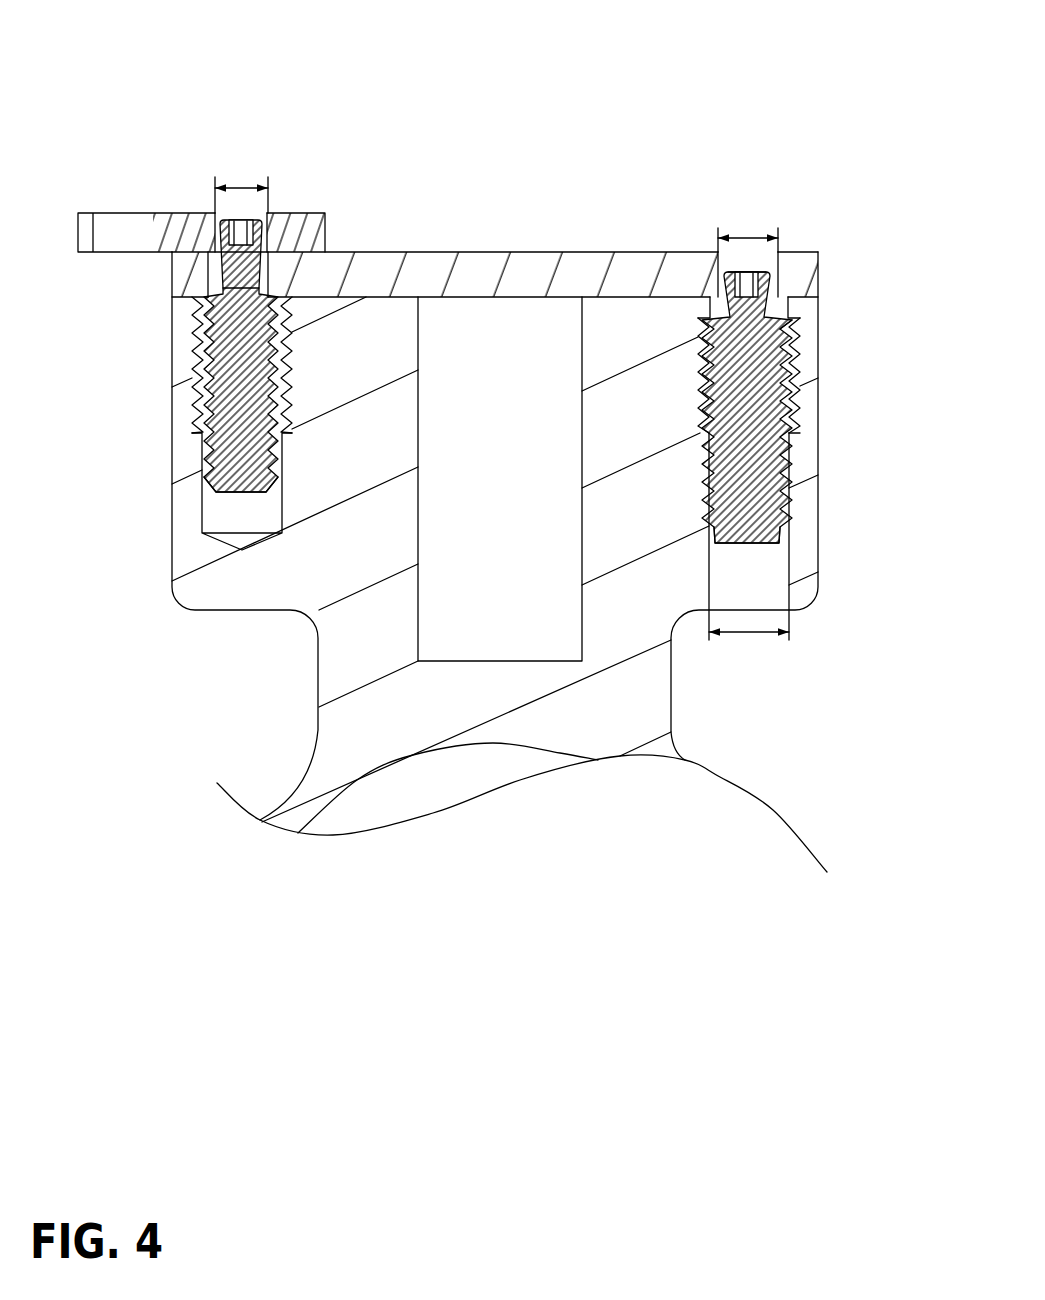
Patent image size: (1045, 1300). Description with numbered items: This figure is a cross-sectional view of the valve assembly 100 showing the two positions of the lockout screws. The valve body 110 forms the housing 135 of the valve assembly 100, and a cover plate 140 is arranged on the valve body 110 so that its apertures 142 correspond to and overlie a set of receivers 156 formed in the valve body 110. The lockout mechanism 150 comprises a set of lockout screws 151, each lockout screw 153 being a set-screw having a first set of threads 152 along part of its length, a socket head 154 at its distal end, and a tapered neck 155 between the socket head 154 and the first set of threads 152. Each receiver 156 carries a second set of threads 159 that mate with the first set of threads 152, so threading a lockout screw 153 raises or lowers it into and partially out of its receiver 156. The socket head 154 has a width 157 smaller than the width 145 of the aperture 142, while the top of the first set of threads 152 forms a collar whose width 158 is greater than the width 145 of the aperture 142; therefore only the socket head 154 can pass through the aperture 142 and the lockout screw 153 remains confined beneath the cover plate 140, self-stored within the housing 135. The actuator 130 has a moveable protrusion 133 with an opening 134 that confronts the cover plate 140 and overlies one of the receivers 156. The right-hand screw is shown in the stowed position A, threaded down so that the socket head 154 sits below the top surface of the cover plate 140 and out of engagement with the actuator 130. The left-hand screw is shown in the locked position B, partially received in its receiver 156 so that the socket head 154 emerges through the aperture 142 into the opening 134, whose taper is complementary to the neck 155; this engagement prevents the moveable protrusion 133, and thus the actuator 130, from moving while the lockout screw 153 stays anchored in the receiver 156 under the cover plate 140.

The valve assembly 100 is at (230, 70).
The valve body 110 is at (215, 588).
The actuator 130 is at (160, 212).
The moveable protrusion 133 is at (310, 213).
The opening 134 is at (278, 213).
The housing 135 is at (820, 465).
The cover plate 140 is at (553, 252).
The aperture 142 is at (747, 252).
The width of the aperture 145 is at (742, 232).
The lockout mechanism 150 is at (197, 522).
The set of lockout screws 151 is at (200, 470).
The first set of threads 152 is at (785, 382).
The lockout screw 153 is at (233, 437).
The socket head 154 is at (778, 276).
The neck 155 is at (793, 320).
The receiver 156 is at (197, 387).
The width of the socket head 157 is at (242, 186).
The width of the first set of threads 158 is at (756, 642).
The second set of threads 159 is at (790, 428).
The stowed position A is at (785, 284).
The locked position B is at (265, 239).